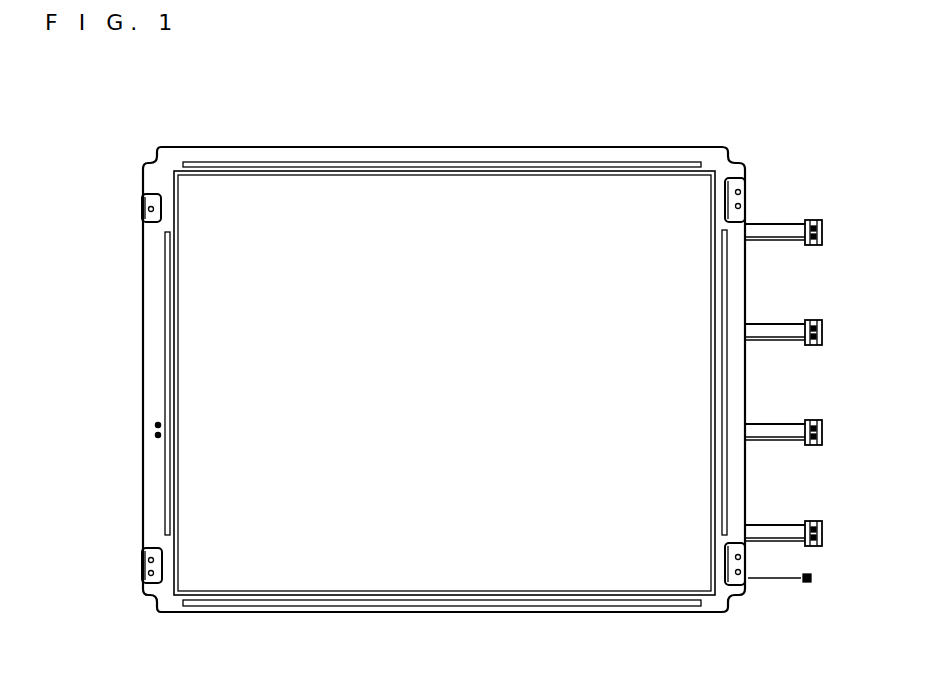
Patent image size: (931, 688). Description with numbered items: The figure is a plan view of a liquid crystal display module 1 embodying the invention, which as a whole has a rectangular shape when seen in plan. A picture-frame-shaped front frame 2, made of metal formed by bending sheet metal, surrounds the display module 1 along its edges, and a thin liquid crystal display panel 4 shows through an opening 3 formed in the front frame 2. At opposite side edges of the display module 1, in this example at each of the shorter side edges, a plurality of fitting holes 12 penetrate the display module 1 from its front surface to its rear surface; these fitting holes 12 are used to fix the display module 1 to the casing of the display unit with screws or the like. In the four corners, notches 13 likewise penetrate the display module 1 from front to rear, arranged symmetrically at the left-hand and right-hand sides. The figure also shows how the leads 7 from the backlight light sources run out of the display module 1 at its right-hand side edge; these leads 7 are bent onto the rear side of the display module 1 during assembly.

The liquid crystal display module 1 is at (291, 146).
The front frame 2 is at (361, 162).
The opening 3 is at (414, 191).
The liquid crystal display panel 4 is at (468, 246).
The leads 7 is at (776, 323).
The fitting holes 12 is at (146, 204).
The notches 13 is at (152, 160).